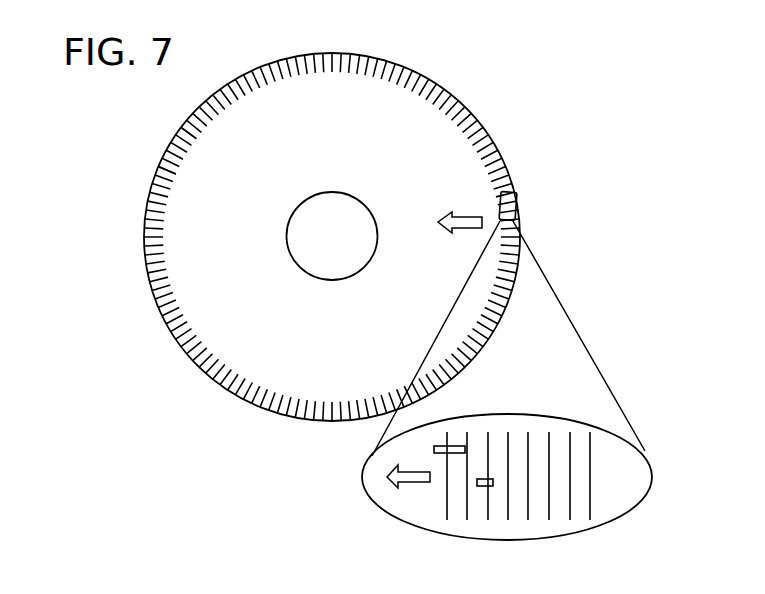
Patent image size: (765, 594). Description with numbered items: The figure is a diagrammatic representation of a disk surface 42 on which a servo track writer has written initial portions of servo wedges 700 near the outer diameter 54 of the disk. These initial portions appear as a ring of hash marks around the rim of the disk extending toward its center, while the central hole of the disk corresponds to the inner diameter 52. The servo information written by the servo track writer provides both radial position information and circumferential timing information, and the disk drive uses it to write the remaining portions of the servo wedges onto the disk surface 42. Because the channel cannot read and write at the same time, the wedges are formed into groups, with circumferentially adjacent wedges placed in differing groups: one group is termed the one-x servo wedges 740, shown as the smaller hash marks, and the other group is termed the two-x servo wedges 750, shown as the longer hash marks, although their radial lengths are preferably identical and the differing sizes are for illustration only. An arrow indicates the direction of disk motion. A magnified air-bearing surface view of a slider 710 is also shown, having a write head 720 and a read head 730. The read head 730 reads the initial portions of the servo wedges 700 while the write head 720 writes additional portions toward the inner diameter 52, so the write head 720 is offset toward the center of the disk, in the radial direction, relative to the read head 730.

The disk surface 42 is at (344, 330).
The inner diameter 52 is at (348, 193).
The outer diameter 54 is at (447, 82).
The servo wedges 700 is at (176, 169).
The slider 710 is at (518, 212).
The write head 720 is at (452, 453).
The read head 730 is at (490, 486).
The 1x servo wedges 740 is at (182, 130).
The 2x servo wedges 750 is at (160, 173).